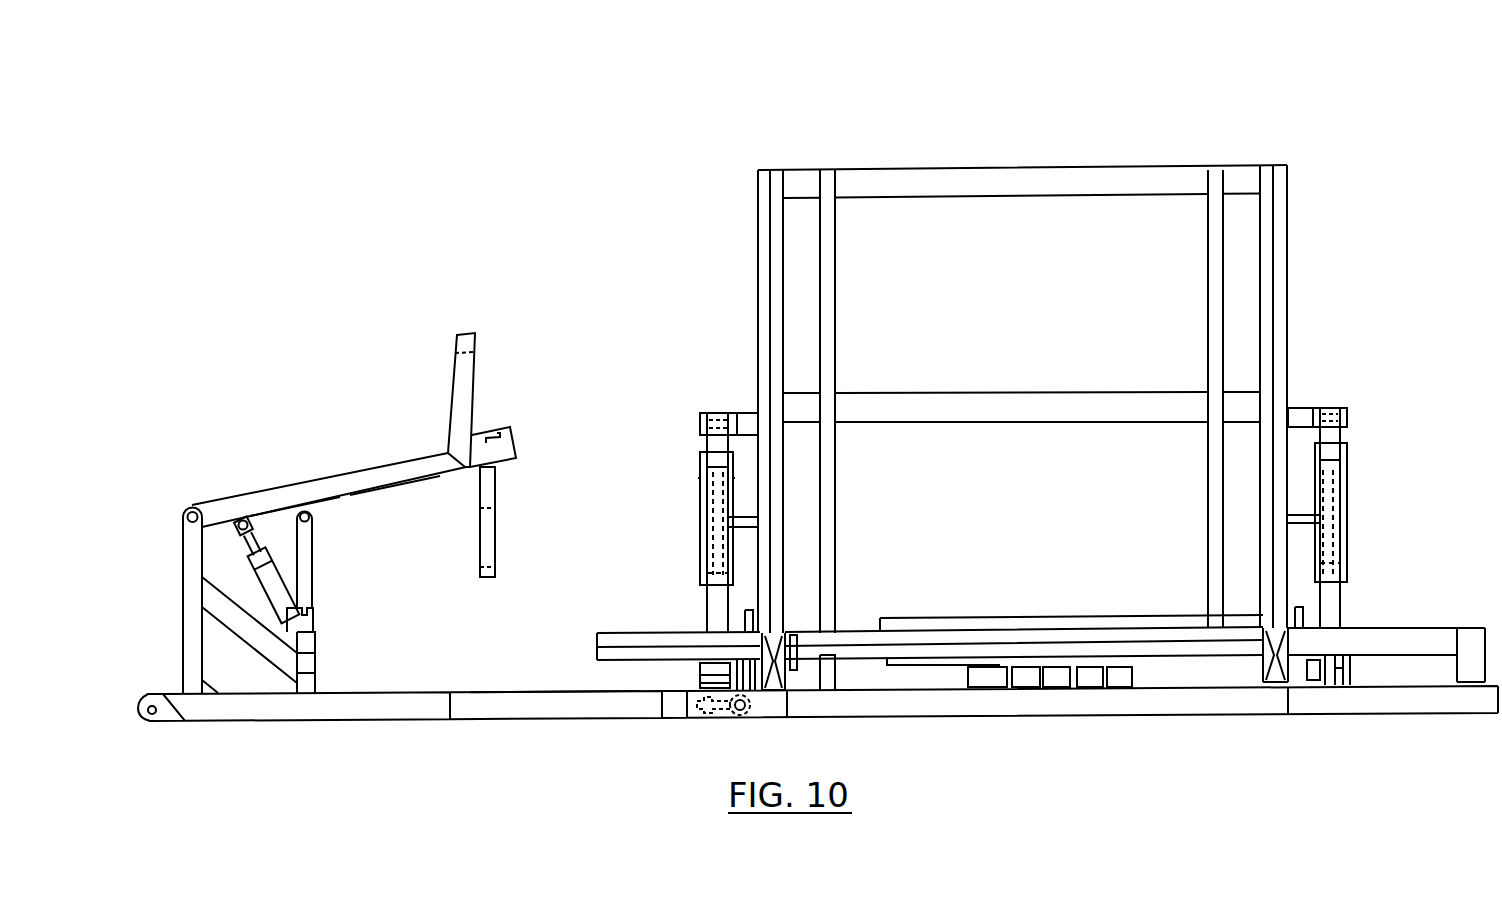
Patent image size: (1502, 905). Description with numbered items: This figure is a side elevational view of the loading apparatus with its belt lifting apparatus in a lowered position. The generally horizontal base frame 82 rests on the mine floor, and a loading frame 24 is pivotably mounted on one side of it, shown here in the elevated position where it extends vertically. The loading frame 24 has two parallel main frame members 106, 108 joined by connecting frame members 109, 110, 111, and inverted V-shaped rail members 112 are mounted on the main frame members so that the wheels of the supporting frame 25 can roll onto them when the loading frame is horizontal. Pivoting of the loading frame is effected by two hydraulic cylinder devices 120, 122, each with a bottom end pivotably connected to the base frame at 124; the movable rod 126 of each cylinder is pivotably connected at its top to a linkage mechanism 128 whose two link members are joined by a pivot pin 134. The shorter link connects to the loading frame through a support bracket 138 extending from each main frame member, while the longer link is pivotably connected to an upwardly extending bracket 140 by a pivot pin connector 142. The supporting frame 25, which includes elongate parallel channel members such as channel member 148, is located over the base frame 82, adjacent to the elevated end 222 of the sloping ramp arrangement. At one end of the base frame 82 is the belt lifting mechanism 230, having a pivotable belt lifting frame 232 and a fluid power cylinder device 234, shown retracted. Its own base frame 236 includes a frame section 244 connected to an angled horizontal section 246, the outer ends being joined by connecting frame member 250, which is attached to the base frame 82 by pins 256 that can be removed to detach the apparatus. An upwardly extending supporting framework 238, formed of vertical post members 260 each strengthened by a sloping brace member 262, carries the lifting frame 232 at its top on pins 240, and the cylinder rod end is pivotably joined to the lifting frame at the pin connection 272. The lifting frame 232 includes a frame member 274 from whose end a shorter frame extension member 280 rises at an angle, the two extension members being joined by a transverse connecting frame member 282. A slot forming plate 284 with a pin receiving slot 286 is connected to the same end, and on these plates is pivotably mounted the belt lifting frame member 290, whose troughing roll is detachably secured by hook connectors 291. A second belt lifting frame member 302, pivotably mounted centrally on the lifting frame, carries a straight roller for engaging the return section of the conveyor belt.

The loading frame 24 is at (1278, 188).
The supporting frame 25 is at (893, 640).
The base frame 82 is at (1088, 703).
The main frame member 106 is at (765, 228).
The main frame member 108 is at (1280, 265).
The connecting frame member 109 is at (1023, 182).
The connecting frame member 110 is at (1008, 407).
The connecting frame member 111 is at (980, 627).
The inverted V-shaped rail member 112 is at (1280, 313).
The hydraulic cylinder device 120 is at (1332, 598).
The hydraulic cylinder device 122 is at (715, 608).
The pivot connection 124 is at (718, 715).
The movable rod 126 is at (1347, 525).
The linkage mechanism 128 is at (700, 502).
The pivot pin 134 is at (700, 423).
The support bracket 138 is at (1295, 412).
The upwardly extending bracket 140 is at (697, 673).
The pivot pin connector 142 is at (1350, 668).
The channel member 148 is at (1072, 635).
The elevated end 222 is at (1470, 627).
The belt lifting mechanism 230 is at (410, 468).
The belt lifting frame 232 is at (342, 487).
The fluid power cylinder device 234 is at (278, 592).
The base frame 236 is at (493, 707).
The supporting framework 238 is at (195, 655).
The pin 240 is at (192, 510).
The frame section 244 is at (358, 712).
The horizontal section 246 is at (556, 702).
The connecting frame member 250 is at (665, 722).
The pin 256 is at (742, 715).
The post member 260 is at (188, 580).
The sloping brace member 262 is at (260, 637).
The pin connection 272 is at (243, 517).
The frame member 274 is at (384, 479).
The frame extension member 280 is at (455, 383).
The connecting frame member 282 is at (482, 345).
The slot forming plate 284 is at (513, 448).
The pin receiving slot 286 is at (507, 427).
The belt lifting frame member 290 is at (495, 537).
The hook connector 291 is at (495, 570).
The second belt lifting frame member 302 is at (305, 558).